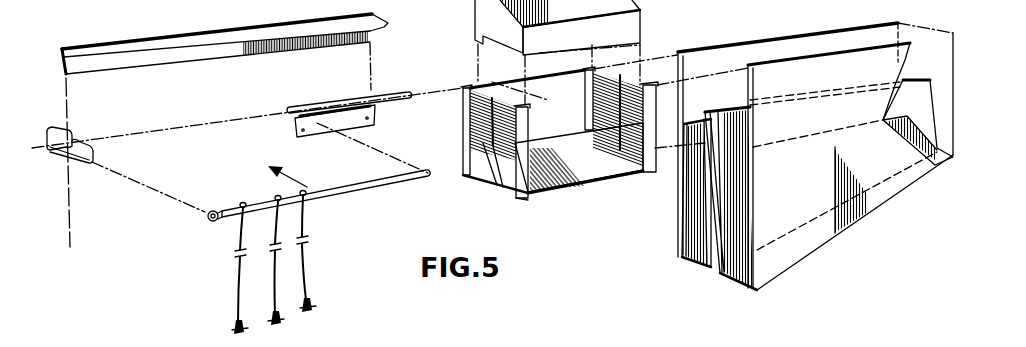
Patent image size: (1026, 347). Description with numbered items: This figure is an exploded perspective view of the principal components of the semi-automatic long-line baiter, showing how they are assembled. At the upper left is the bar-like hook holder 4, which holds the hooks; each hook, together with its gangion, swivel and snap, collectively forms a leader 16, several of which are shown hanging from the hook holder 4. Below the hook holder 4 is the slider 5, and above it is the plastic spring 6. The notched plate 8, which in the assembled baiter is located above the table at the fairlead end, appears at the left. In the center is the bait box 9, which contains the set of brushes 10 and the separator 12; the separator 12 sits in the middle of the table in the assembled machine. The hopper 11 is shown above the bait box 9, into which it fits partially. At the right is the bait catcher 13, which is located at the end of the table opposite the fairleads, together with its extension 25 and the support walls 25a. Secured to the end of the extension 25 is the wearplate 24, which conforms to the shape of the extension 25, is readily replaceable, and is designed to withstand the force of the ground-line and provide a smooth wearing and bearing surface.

The hook holder 4 is at (366, 189).
The slider 5 is at (325, 108).
The plastic spring 6 is at (217, 30).
The notched plate 8 is at (66, 152).
The bait box 9 is at (558, 186).
The brushes 10 is at (472, 128).
The hopper 11 is at (478, 0).
The separator 12 is at (516, 188).
The bait catcher 13 is at (819, 43).
The leader 16 is at (236, 330).
The wearplate 24 is at (925, 100).
The extension 25 is at (735, 112).
The support walls 25a is at (705, 228).